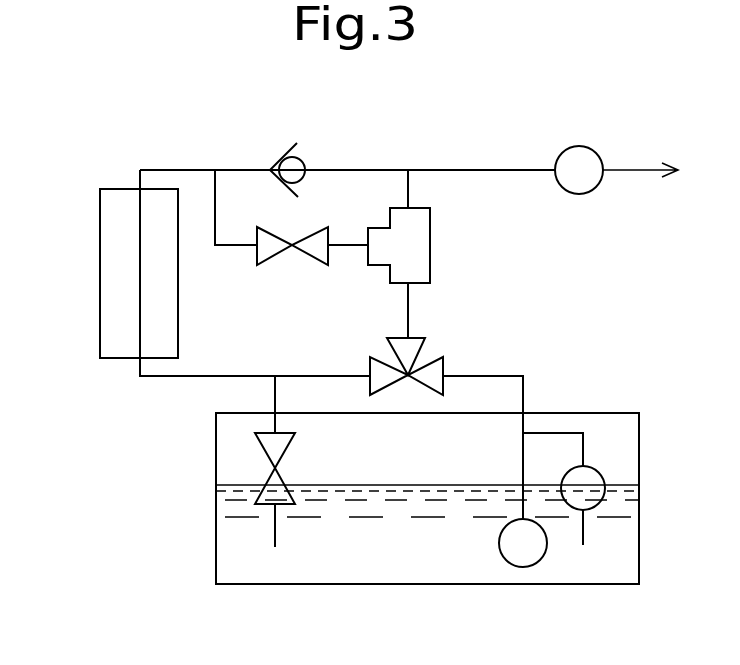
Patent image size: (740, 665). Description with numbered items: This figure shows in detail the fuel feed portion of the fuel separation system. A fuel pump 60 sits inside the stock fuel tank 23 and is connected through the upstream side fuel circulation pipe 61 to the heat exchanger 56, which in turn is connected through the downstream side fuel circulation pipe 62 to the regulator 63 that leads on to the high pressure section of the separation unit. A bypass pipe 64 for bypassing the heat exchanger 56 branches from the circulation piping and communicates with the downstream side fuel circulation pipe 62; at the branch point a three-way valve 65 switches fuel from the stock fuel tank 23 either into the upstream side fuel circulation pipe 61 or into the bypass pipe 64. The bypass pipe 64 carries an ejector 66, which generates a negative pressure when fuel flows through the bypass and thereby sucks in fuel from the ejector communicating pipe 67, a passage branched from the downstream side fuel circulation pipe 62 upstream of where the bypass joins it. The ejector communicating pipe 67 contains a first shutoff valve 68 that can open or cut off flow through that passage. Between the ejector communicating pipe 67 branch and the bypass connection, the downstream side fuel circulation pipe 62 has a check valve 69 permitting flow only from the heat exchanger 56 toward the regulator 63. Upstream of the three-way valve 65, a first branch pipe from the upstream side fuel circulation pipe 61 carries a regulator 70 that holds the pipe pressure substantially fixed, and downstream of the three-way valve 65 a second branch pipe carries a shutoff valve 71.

The stock fuel tank 23 is at (240, 562).
The heat exchanger 56 is at (100, 212).
The fuel pump 60 is at (540, 560).
The upstream side fuel circulation pipe 61 is at (503, 375).
The downstream side fuel circulation pipe 62 is at (465, 170).
The regulator 63 is at (600, 150).
The bypass pipe 64 is at (410, 315).
The three-way valve 65 is at (430, 350).
The ejector 66 is at (430, 236).
The ejector communicating pipe 67 is at (240, 247).
The first shutoff valve 68 is at (303, 265).
The check valve 69 is at (310, 155).
The regulator 70 is at (603, 472).
The shutoff valve 71 is at (255, 437).